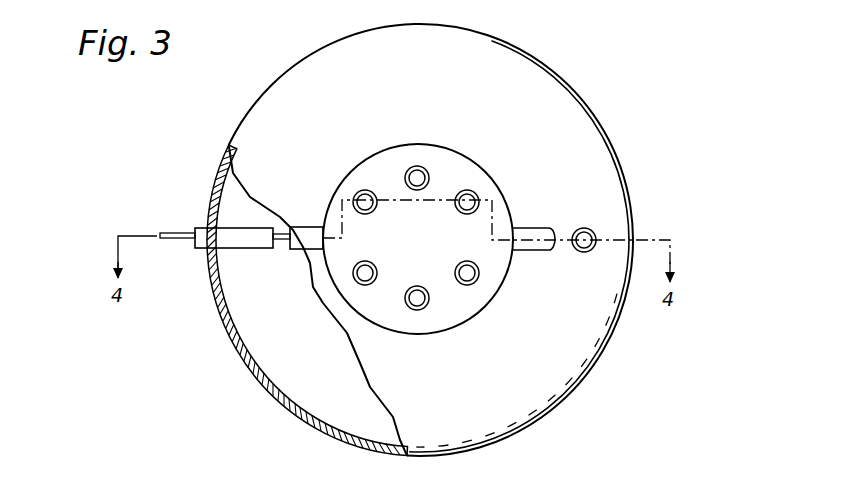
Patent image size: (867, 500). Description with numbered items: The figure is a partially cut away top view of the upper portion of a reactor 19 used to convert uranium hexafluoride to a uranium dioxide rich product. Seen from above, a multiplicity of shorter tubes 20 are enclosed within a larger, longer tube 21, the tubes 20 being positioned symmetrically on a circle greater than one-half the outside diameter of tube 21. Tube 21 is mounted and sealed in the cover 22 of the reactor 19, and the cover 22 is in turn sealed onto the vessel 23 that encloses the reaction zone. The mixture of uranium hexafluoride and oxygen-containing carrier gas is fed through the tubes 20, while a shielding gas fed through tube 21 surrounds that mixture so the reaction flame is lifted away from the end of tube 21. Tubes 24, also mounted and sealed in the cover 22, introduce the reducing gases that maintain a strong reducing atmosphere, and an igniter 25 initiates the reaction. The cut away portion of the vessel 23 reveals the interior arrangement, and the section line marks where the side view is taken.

The reactor 19 is at (668, 53).
The tubes 20 is at (473, 195).
The tube 21 is at (494, 297).
The cover 22 is at (578, 386).
The vessel 23 is at (253, 364).
The tubes 24 is at (596, 233).
The igniter 25 is at (210, 228).